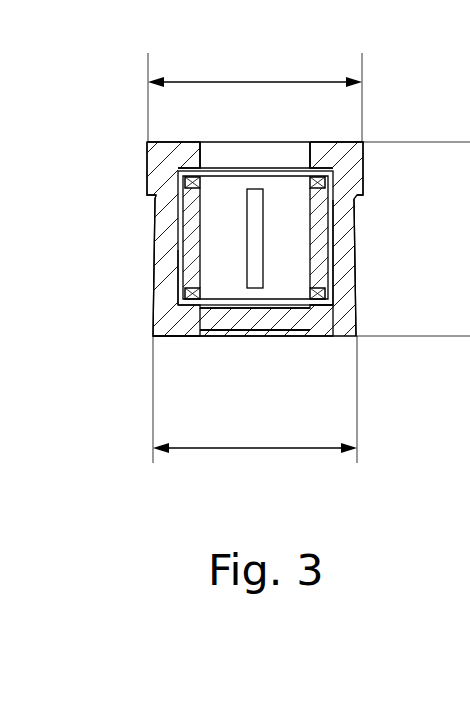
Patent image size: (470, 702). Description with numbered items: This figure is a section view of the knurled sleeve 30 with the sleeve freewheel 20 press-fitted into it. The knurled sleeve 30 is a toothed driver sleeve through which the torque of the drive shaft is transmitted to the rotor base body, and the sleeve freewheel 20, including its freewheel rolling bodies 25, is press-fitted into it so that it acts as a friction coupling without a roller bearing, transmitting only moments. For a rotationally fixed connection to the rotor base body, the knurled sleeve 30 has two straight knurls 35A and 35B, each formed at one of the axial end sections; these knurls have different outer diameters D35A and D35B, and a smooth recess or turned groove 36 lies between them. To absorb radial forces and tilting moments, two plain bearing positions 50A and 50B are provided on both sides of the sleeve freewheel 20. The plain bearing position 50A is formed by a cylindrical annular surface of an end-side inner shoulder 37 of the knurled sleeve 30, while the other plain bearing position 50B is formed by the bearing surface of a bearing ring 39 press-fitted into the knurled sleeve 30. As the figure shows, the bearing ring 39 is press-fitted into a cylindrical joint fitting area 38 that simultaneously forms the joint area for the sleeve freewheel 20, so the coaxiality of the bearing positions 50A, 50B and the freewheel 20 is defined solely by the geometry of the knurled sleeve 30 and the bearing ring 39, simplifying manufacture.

The sleeve freewheel 20 is at (220, 228).
The freewheel rolling bodies 25 is at (185, 262).
The knurled sleeve 30 is at (342, 268).
The straight knurl 35A is at (147, 178).
The straight knurl 35B is at (153, 300).
The turned groove 36 is at (357, 228).
The end-side inner shoulder 37 is at (350, 165).
The cylindrical joint fitting area 38 is at (191, 272).
The bearing ring 39 is at (336, 318).
The plain bearing position 50A is at (202, 162).
The plain bearing position 50B is at (212, 337).
The outer diameter D35A is at (255, 95).
The outer diameter D35B is at (255, 412).